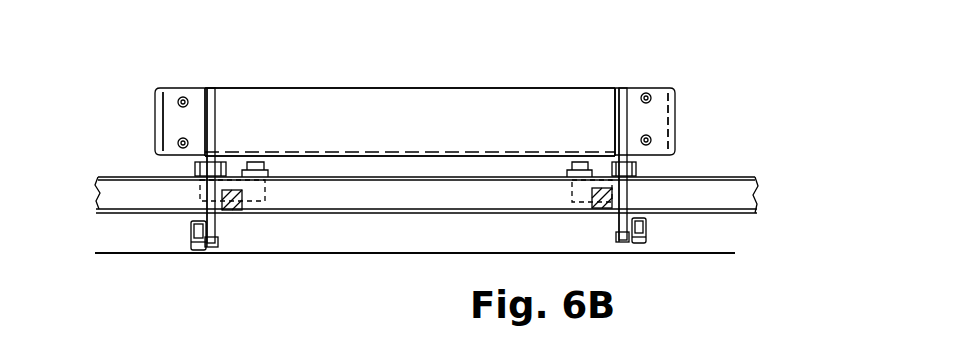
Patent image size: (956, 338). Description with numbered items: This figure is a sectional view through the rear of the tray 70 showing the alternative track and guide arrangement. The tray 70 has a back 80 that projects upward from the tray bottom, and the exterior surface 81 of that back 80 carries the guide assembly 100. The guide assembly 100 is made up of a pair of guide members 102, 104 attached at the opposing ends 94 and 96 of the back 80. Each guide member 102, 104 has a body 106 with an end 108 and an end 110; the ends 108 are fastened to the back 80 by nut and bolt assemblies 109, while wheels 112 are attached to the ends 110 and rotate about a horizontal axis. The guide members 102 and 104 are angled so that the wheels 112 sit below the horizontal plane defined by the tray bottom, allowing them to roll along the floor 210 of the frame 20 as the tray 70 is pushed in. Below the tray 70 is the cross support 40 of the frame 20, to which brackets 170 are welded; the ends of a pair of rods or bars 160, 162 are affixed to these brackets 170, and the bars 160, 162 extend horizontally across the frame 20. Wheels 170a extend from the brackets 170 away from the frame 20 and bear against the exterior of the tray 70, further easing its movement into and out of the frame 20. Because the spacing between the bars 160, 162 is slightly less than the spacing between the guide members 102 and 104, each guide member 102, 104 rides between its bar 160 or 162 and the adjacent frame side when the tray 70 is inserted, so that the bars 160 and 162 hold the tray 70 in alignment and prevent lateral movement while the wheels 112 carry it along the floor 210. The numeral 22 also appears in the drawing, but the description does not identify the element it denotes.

The frame 20 is at (415, 295).
The base frame 22 is at (445, 337).
The cross support 40 is at (108, 188).
The tray 70 is at (313, 88).
The back 80 is at (382, 112).
The exterior surface 81 is at (478, 113).
The end 94 is at (155, 115).
The end 96 is at (657, 85).
The guide assembly 100 is at (190, 267).
The guide member 102 is at (632, 95).
The guide member 104 is at (168, 103).
The body 106 is at (192, 128).
The end 108 is at (182, 120).
The nut and bolt assembly 109 is at (652, 143).
The end 110 is at (210, 245).
The wheel 112 is at (195, 247).
The bar 160 is at (598, 208).
The bar 162 is at (232, 212).
The bracket 170 is at (270, 218).
The wheel 170a is at (200, 168).
The floor 210 is at (445, 253).